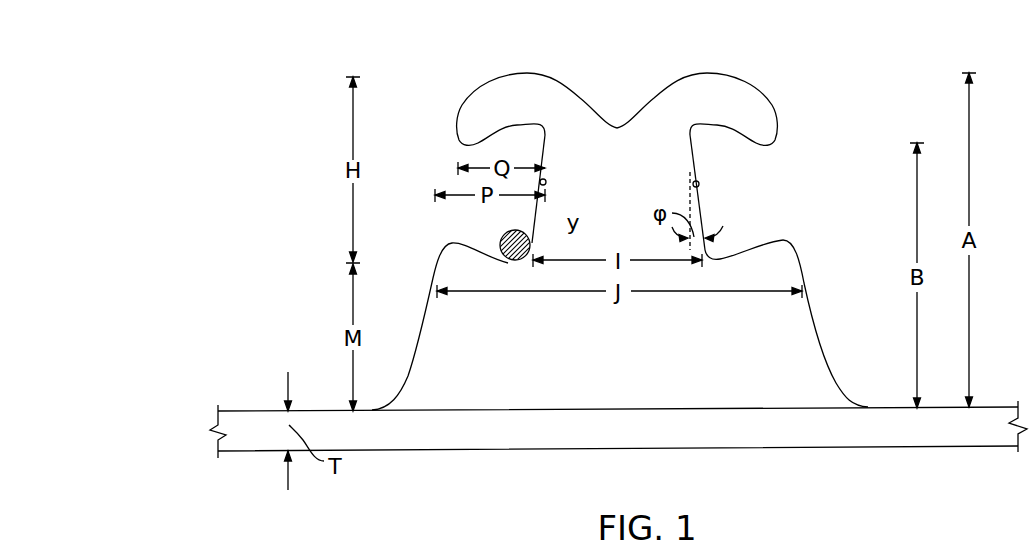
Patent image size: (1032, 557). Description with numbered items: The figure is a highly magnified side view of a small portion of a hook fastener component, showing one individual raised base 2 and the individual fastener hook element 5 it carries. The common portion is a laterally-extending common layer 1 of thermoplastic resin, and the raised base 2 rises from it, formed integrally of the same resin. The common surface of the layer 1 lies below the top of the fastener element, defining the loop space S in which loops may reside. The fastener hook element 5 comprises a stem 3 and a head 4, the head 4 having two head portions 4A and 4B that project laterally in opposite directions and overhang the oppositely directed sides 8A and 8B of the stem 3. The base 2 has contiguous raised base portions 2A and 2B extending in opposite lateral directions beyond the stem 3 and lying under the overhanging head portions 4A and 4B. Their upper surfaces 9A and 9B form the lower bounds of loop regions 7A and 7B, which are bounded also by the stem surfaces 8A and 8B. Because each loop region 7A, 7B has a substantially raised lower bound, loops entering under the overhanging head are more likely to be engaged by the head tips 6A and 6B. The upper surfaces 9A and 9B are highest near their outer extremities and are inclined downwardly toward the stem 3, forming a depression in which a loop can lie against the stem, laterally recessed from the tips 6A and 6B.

The common layer 1 is at (883, 438).
The raised base 2 is at (853, 243).
The raised base portion 2A is at (755, 356).
The raised base portion 2B is at (452, 356).
The stem 3 is at (722, 150).
The head 4 is at (785, 72).
The head portion 4A is at (708, 118).
The head portion 4B is at (505, 118).
The fastener hook element 5 is at (853, 72).
The head tip 6A is at (775, 142).
The head tip 6B is at (458, 142).
The loop region 7A is at (738, 231).
The loop region 7B is at (485, 230).
The stem side 8A is at (692, 184).
The stem side 8B is at (547, 181).
The upper surface of base portion 9A is at (775, 241).
The upper surface of base portion 9B is at (473, 246).
The loop space S is at (232, 353).